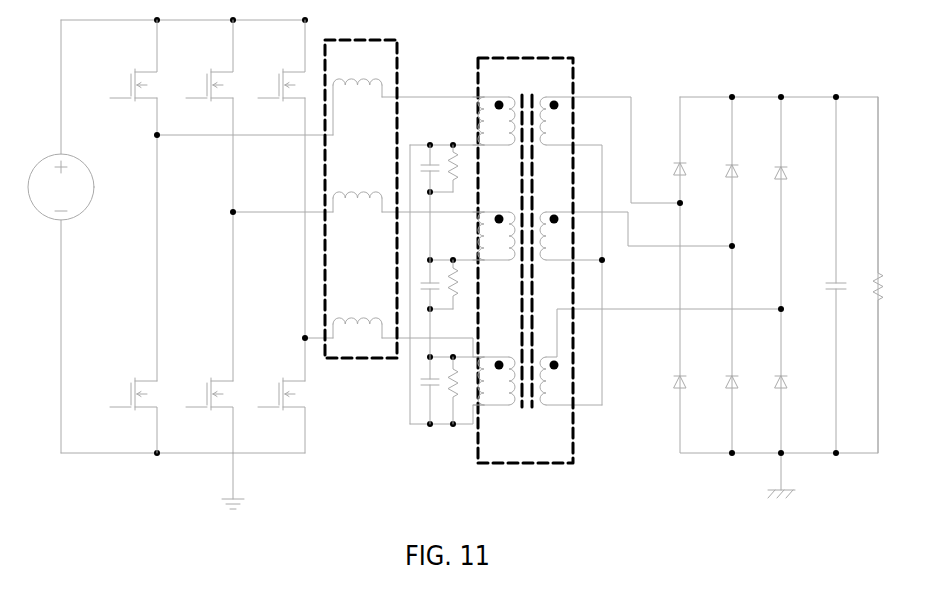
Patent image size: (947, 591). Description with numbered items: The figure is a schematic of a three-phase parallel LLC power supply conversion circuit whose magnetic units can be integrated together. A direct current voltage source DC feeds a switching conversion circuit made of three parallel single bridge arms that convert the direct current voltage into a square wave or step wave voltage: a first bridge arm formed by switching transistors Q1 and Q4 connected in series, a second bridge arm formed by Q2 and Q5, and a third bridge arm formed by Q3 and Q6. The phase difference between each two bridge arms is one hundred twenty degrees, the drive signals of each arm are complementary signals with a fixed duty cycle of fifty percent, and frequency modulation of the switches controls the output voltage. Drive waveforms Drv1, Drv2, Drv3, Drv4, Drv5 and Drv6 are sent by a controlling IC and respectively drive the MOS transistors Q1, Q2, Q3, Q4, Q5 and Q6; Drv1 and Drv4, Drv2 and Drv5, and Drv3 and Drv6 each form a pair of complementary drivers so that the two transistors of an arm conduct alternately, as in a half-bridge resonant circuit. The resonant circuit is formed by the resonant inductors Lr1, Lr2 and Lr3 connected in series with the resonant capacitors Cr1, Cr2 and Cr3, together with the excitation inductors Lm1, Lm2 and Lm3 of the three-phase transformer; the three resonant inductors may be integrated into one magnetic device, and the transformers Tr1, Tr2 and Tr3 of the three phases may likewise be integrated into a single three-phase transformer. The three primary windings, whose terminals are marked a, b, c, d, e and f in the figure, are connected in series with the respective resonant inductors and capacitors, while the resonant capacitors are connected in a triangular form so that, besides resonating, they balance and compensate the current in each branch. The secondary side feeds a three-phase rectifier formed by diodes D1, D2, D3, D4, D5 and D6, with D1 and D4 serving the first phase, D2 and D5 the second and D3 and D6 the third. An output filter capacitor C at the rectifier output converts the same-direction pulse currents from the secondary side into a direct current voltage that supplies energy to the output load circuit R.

The DC voltage source DC is at (53, 199).
The switching transistor Q1 is at (133, 60).
The switching transistor Q2 is at (216, 60).
The switching transistor Q3 is at (286, 60).
The switching transistor Q4 is at (133, 403).
The switching transistor Q5 is at (213, 403).
The switching transistor Q6 is at (285, 403).
The drive waveform Drv1 is at (106, 110).
The drive waveform Drv2 is at (207, 110).
The drive waveform Drv3 is at (274, 110).
The drive waveform Drv4 is at (107, 421).
The drive waveform Drv5 is at (207, 421).
The drive waveform Drv6 is at (274, 421).
The first-phase resonant inductor Lr1 is at (357, 94).
The second-phase resonant inductor Lr2 is at (357, 188).
The third-phase resonant inductor Lr3 is at (357, 315).
The first-phase resonant capacitor Cr1 is at (430, 155).
The second-phase resonant capacitor Cr2 is at (430, 250).
The third-phase resonant capacitor Cr3 is at (430, 383).
The first-phase excitation inductor Lm1 is at (484, 168).
The second-phase excitation inductor Lm2 is at (484, 284).
The third-phase excitation inductor Lm3 is at (484, 397).
The first-phase transformer Tr1 is at (518, 109).
The second-phase transformer Tr2 is at (518, 224).
The third-phase transformer Tr3 is at (518, 369).
The node a is at (473, 88).
The node b is at (473, 133).
The node c is at (473, 198).
The node d is at (473, 251).
The node e is at (473, 359).
The node f is at (473, 405).
The rectifier diode D1 is at (697, 175).
The rectifier diode D2 is at (748, 176).
The rectifier diode D3 is at (797, 176).
The rectifier diode D4 is at (697, 388).
The rectifier diode D5 is at (748, 388).
The rectifier diode D6 is at (798, 388).
The output filter capacitor C is at (827, 291).
The output load circuit R is at (870, 275).